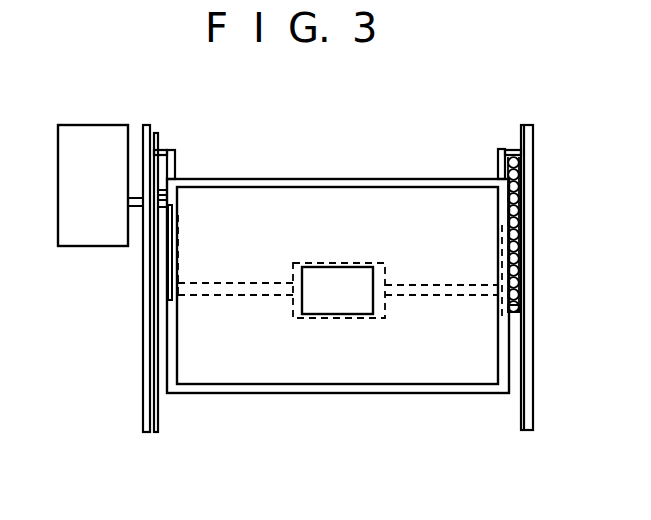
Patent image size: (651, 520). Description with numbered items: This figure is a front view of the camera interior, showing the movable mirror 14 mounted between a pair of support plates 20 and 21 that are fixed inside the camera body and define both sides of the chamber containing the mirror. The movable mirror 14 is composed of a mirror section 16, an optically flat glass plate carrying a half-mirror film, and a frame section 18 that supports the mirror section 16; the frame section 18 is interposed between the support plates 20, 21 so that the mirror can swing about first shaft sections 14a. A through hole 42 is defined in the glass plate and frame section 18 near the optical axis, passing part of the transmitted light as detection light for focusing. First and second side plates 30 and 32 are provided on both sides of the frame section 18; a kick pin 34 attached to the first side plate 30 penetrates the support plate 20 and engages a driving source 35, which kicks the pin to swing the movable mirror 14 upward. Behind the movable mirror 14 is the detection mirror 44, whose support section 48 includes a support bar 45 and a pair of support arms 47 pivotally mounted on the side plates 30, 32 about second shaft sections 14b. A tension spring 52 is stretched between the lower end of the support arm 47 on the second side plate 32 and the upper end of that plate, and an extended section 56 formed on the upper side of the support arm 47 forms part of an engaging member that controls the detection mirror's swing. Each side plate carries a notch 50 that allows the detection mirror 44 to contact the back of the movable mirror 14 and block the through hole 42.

The movable mirror 14 is at (270, 395).
The first shaft sections 14a is at (158, 150).
The second shaft sections 14b is at (179, 228).
The mirror section 16 is at (330, 372).
The frame section 18 is at (383, 394).
The support plate 20 is at (149, 433).
The support plate 21 is at (528, 431).
The first side plate 30 is at (178, 348).
The second side plate 32 is at (502, 358).
The kick pin 34 is at (133, 210).
The driving source 35 is at (95, 125).
The through hole 42 is at (306, 300).
The detection mirror 44 is at (389, 279).
The support bar 45 is at (446, 292).
The support arms 47 is at (519, 292).
The support section 48 is at (168, 266).
The notch 50 is at (172, 306).
The tension spring 52 is at (519, 207).
The extended section 56 is at (168, 214).